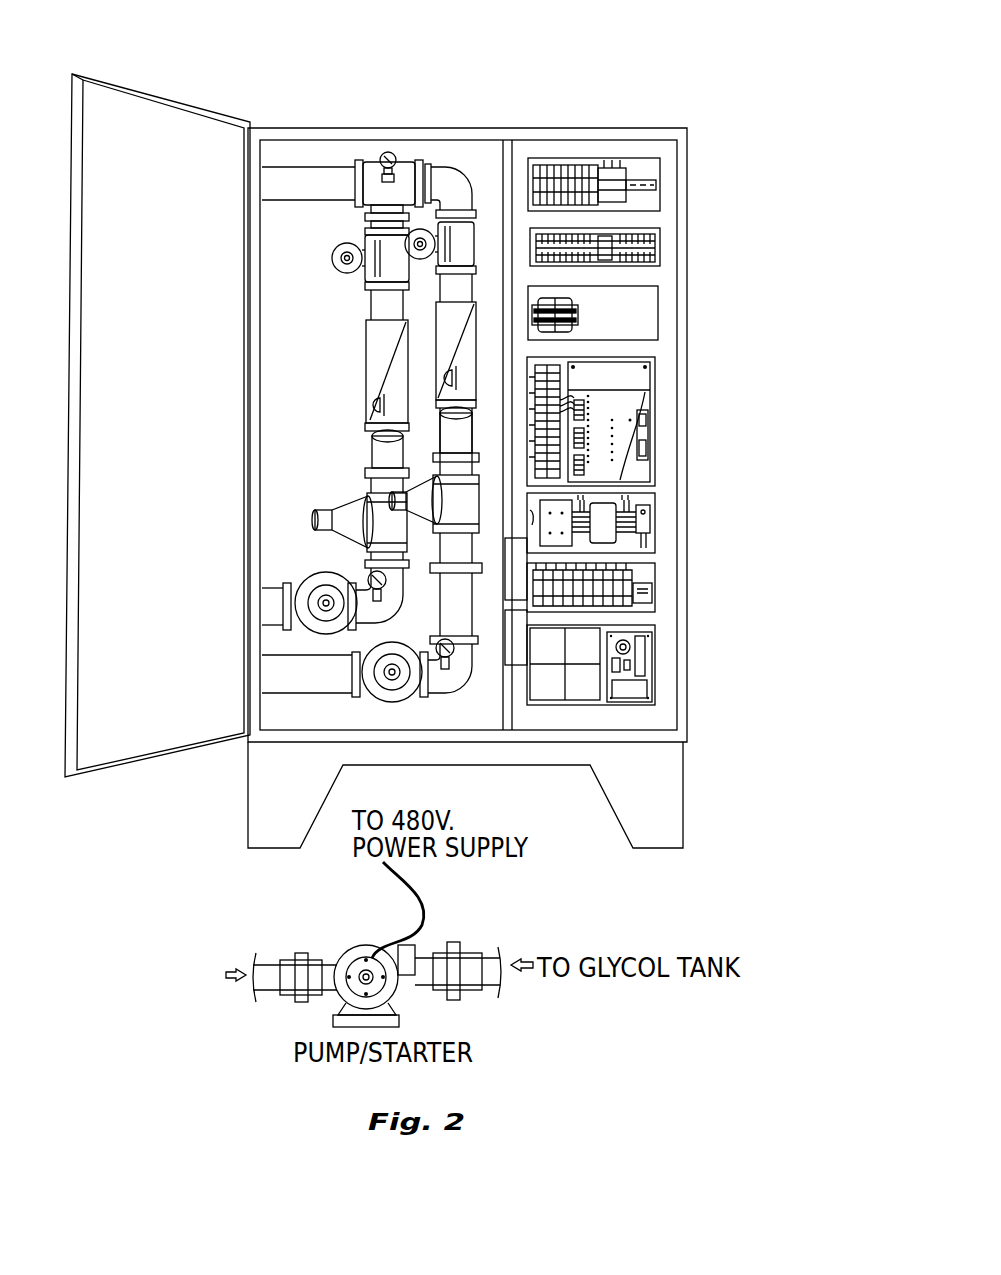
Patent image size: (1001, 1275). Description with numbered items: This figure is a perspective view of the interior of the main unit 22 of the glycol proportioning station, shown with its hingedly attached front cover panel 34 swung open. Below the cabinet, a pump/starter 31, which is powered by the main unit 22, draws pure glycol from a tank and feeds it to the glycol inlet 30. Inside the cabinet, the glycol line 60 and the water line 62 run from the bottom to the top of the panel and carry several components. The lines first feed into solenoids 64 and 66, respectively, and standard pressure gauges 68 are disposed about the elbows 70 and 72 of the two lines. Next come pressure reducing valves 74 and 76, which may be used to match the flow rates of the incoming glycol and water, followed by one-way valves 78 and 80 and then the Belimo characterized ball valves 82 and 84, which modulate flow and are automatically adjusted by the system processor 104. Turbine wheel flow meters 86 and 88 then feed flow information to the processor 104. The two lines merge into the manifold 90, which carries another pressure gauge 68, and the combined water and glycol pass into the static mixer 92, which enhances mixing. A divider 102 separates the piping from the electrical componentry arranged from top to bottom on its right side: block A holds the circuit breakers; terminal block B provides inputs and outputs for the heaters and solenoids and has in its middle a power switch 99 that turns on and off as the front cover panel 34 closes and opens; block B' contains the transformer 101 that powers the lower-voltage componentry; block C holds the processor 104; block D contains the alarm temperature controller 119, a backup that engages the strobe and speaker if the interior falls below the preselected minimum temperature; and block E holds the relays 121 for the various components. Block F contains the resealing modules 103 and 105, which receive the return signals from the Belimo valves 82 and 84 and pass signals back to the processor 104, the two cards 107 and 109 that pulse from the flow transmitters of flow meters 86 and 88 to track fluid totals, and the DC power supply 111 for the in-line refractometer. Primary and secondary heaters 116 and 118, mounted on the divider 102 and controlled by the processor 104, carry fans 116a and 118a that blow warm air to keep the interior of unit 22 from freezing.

The main unit 22 is at (443, 128).
The front cover panel 34 is at (165, 130).
The glycol inlet 30 is at (157, 977).
The pump/starter 31 is at (332, 948).
The glycol line 60 is at (266, 610).
The water line 62 is at (272, 672).
The solenoid 64 is at (300, 576).
The solenoid 66 is at (400, 700).
The pressure gauges 68 is at (390, 152).
The elbow 70 is at (368, 592).
The elbow 72 is at (430, 698).
The pressure reducing valve 74 is at (318, 514).
The pressure reducing valve 76 is at (390, 496).
The one-way valve 78 is at (374, 440).
The one-way valve 80 is at (385, 426).
The Belimo valve 82 is at (370, 350).
The Belimo valve 84 is at (438, 335).
The turbine wheel flow meter 86 is at (337, 262).
The turbine wheel flow meter 88 is at (418, 250).
The manifold 90 is at (403, 183).
The static mixer 92 is at (301, 166).
The power switch 99 is at (617, 232).
The transformer 101 is at (568, 337).
The divider 102 is at (508, 158).
The resealing module 103 is at (593, 690).
The system processor 104 is at (620, 480).
The resealing module 105 is at (590, 650).
The card 107 is at (606, 712).
The card 109 is at (640, 660).
The DC power supply 111 is at (628, 682).
The primary heater 116 is at (540, 690).
The fan 116a is at (550, 652).
The secondary heater 118 is at (510, 628).
The fan 118a is at (523, 562).
The alarm temperature controller 119 is at (648, 512).
The relays 121 is at (634, 580).
The block A is at (672, 188).
The terminal block B is at (630, 248).
The block B' is at (631, 313).
The block C is at (672, 423).
The block D is at (672, 520).
The block E is at (672, 589).
The block F is at (674, 660).